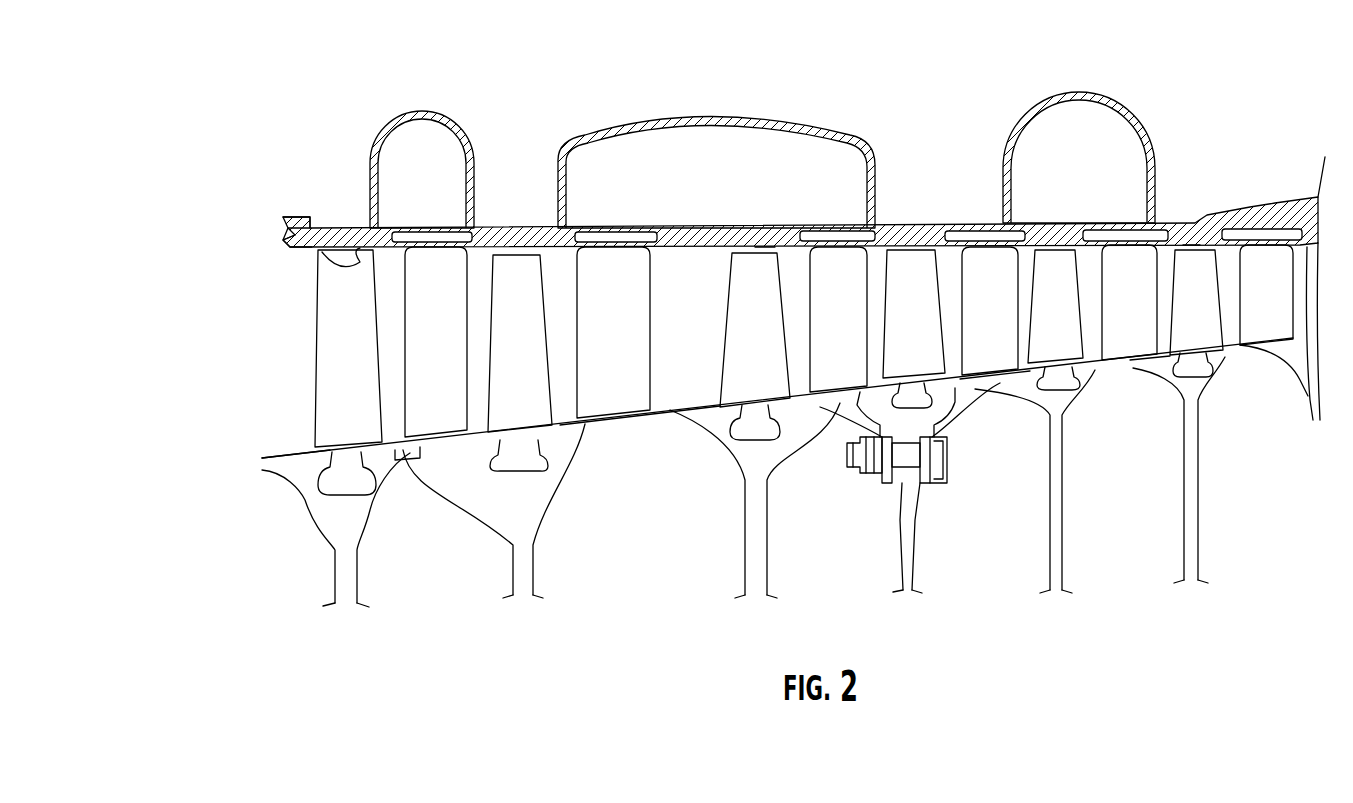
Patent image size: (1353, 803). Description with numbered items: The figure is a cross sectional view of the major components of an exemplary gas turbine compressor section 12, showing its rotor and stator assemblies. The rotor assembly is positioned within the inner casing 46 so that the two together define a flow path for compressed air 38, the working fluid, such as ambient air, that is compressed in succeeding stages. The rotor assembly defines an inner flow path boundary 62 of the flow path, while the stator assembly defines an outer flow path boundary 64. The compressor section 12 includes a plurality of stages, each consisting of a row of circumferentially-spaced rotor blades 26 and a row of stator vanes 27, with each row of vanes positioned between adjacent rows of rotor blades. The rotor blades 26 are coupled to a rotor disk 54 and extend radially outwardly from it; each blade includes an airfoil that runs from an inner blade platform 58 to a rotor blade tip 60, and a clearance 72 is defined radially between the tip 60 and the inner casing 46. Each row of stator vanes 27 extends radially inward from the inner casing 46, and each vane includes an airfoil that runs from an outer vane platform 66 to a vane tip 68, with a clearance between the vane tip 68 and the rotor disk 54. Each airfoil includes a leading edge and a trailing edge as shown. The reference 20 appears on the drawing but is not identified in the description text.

The compressor section 12 is at (259, 120).
The turbine section 20 is at (589, 432).
The rotor blades 26 is at (1205, 314).
The stator vanes 27 is at (1274, 312).
The compressed air 38 is at (226, 332).
The inner casing 46 is at (517, 228).
The rotor disk 54 is at (310, 510).
The inner blade platform 58 is at (313, 452).
The rotor blade tip 60 is at (330, 262).
The inner flow path boundary 62 is at (437, 412).
The outer flow path boundary 64 is at (353, 257).
The outer vane platform 66 is at (568, 225).
The vane tip 68 is at (610, 413).
The clearance 72 is at (766, 238).